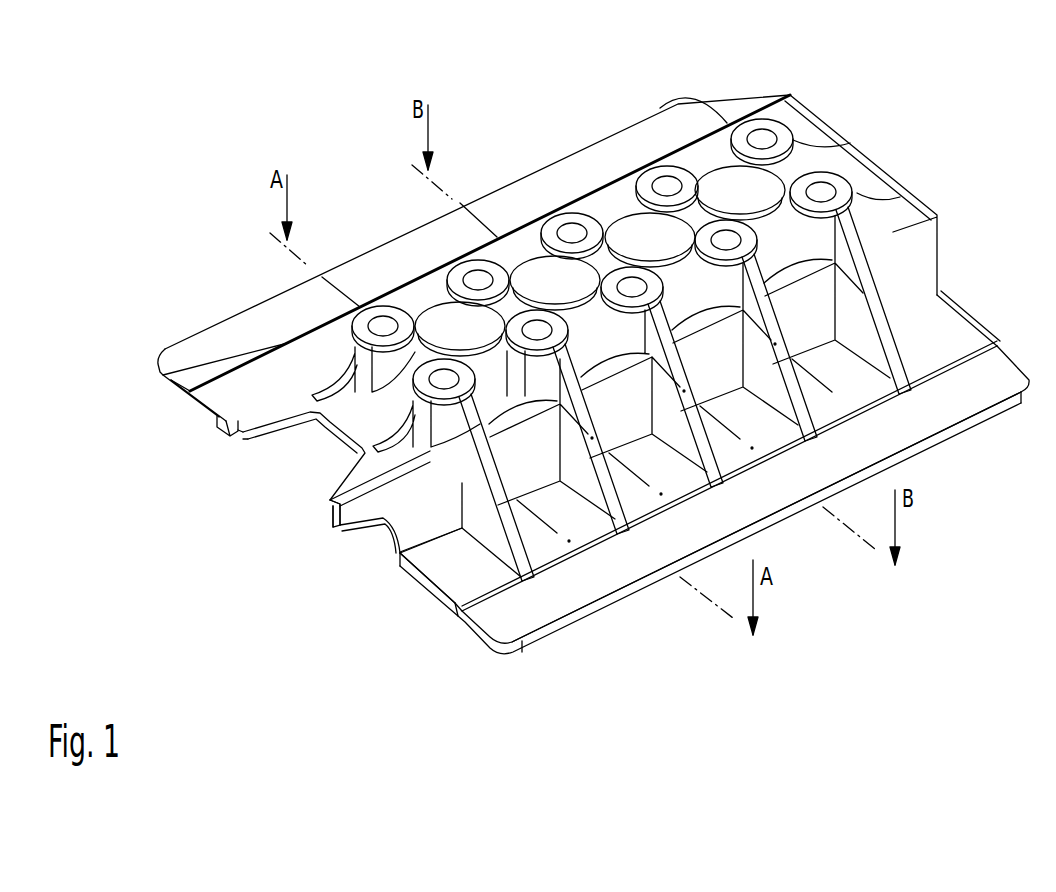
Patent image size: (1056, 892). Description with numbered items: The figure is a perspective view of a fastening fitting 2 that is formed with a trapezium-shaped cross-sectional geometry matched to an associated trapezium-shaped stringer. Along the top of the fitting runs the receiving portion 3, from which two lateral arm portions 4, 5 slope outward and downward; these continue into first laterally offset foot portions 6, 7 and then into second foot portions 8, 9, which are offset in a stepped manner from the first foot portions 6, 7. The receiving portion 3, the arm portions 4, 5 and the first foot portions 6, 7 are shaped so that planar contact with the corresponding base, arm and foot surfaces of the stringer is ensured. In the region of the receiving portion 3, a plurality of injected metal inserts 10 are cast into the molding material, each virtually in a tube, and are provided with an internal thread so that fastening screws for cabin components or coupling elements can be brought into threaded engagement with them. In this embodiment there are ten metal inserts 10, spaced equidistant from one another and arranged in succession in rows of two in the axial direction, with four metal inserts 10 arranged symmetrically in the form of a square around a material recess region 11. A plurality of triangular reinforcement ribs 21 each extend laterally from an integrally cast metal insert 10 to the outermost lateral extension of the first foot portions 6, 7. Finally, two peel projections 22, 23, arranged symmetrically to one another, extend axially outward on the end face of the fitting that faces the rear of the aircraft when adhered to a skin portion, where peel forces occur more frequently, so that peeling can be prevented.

The fastening fitting 2 is at (901, 97).
The receiving portion 3 is at (427, 307).
The lateral arm portion 4 is at (440, 510).
The lateral arm portion 5 is at (200, 400).
The first foot portion 6 is at (455, 580).
The first foot portion 7 is at (215, 392).
The second foot portion 8 is at (562, 605).
The second foot portion 9 is at (185, 352).
The metal insert 10 is at (660, 178).
The material recess region 11 is at (740, 190).
The triangular reinforcement rib 21 is at (887, 333).
The peel projection 22 is at (328, 500).
The peel projection 23 is at (232, 434).